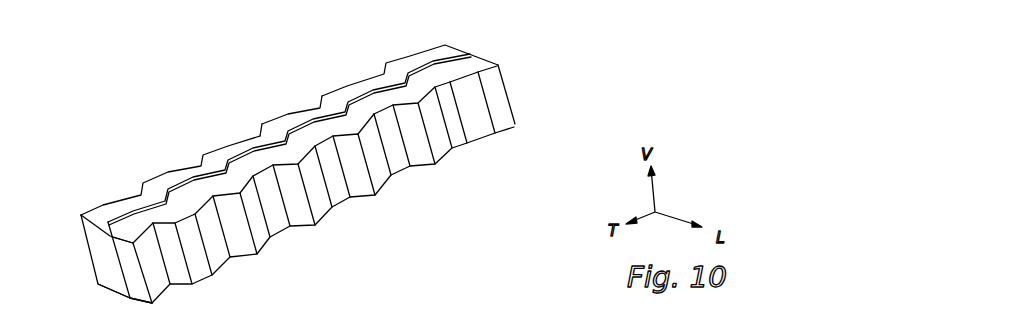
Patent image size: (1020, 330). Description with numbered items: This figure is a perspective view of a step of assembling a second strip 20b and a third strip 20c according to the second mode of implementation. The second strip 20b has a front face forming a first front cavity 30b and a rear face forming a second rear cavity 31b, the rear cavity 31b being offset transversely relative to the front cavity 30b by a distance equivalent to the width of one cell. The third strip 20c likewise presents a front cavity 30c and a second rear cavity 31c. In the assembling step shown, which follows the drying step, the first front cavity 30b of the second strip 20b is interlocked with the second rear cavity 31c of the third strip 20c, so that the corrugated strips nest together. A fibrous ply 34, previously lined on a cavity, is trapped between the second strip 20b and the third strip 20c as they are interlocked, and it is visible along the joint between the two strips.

The second strip 20b is at (462, 43).
The third strip 20c is at (525, 92).
The first front cavity 30b is at (370, 106).
The first front cavity of the third strip 30c is at (497, 118).
The second rear cavity 31b is at (262, 127).
The second rear cavity of the third strip 31c is at (352, 118).
The fibrous ply 34 is at (421, 63).